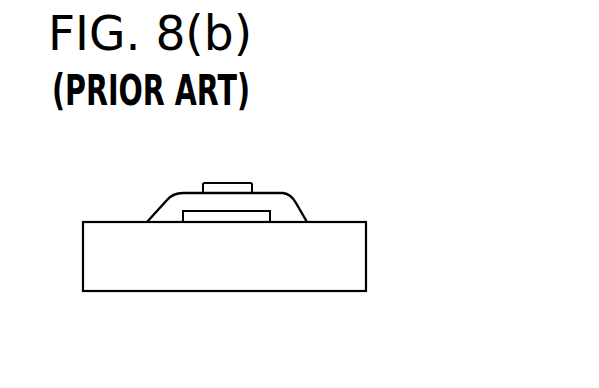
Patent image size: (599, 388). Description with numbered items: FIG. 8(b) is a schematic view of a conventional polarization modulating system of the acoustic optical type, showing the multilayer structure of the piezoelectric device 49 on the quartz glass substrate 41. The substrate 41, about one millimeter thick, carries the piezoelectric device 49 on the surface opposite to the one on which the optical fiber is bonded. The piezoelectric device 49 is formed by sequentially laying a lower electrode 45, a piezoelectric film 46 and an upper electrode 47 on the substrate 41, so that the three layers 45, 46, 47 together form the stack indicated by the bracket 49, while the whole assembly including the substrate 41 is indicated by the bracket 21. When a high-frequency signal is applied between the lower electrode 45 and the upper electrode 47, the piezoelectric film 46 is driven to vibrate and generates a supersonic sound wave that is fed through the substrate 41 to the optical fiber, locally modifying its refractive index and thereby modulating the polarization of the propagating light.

The ink jet recording head (prior art) 21 is at (269, 215).
The quartz glass substrate 41 is at (318, 280).
The lower electrode / insulating layer 45 is at (286, 193).
The piezoelectric film 46 is at (270, 202).
The upper electrode 47 is at (242, 161).
The piezoelectric device 49 is at (267, 149).